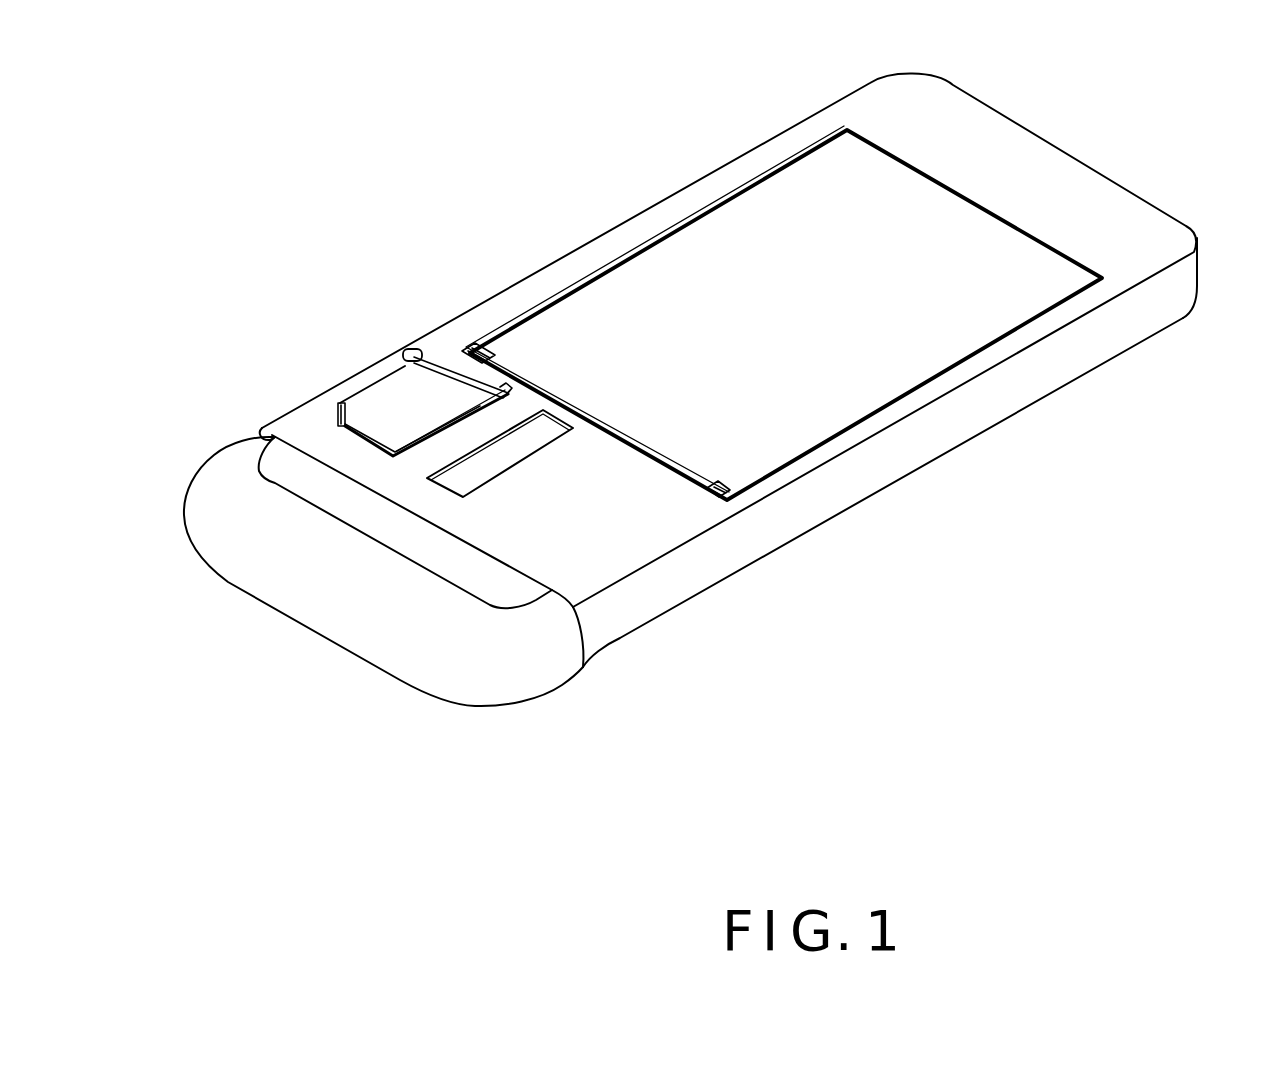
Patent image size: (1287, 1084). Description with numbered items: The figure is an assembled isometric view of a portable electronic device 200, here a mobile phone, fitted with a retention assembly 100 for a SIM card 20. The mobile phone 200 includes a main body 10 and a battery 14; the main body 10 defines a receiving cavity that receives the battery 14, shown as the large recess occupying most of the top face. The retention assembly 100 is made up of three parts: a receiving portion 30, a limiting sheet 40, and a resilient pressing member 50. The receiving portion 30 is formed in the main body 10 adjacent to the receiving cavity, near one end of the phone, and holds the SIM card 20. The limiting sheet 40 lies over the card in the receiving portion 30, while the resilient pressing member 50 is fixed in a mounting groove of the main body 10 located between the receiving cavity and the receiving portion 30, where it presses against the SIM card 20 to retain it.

The portable electronic device 200 is at (577, 145).
The main body 10 is at (1105, 220).
The battery 14 is at (880, 360).
The retention assembly 100 is at (447, 217).
The SIM card 20 is at (383, 418).
The receiving portion 30 is at (340, 403).
The limiting sheet 40 is at (440, 440).
The resilient pressing member 50 is at (476, 345).